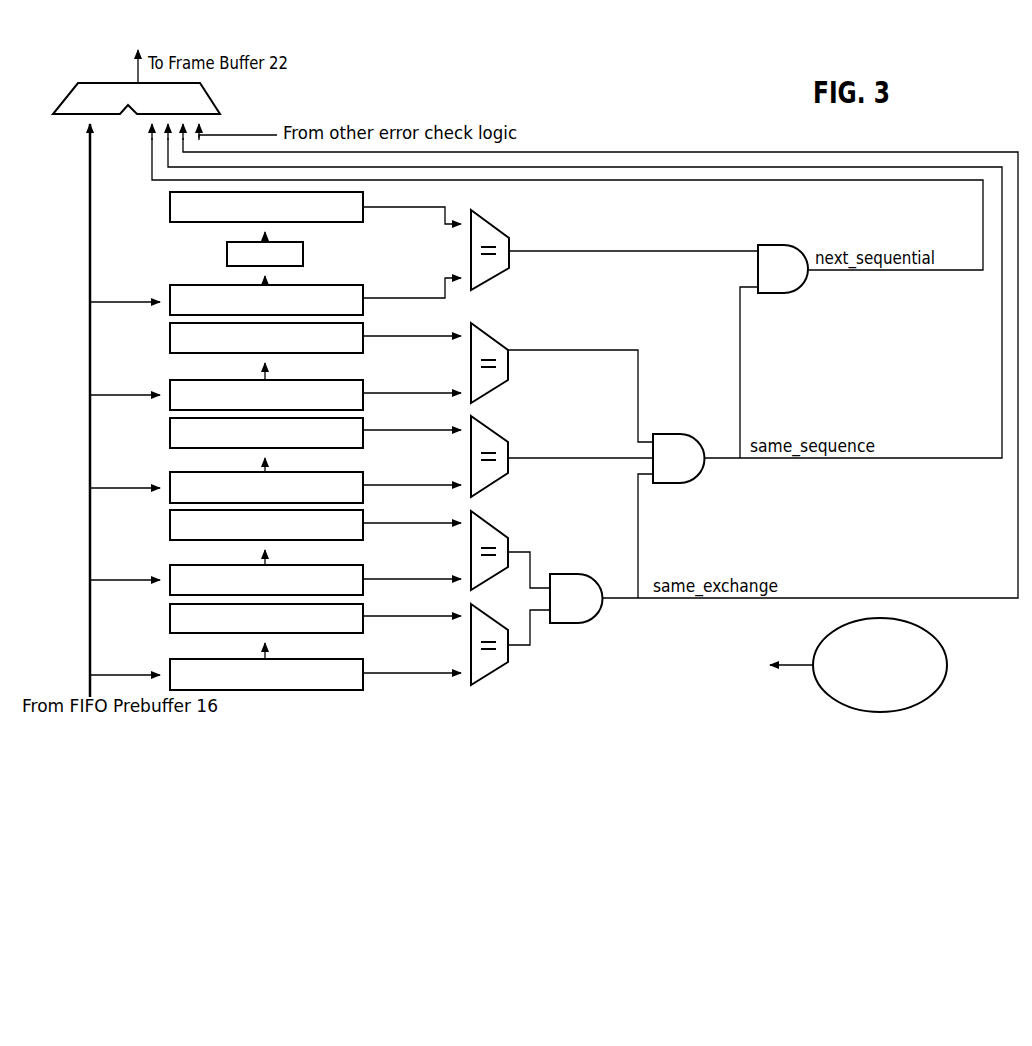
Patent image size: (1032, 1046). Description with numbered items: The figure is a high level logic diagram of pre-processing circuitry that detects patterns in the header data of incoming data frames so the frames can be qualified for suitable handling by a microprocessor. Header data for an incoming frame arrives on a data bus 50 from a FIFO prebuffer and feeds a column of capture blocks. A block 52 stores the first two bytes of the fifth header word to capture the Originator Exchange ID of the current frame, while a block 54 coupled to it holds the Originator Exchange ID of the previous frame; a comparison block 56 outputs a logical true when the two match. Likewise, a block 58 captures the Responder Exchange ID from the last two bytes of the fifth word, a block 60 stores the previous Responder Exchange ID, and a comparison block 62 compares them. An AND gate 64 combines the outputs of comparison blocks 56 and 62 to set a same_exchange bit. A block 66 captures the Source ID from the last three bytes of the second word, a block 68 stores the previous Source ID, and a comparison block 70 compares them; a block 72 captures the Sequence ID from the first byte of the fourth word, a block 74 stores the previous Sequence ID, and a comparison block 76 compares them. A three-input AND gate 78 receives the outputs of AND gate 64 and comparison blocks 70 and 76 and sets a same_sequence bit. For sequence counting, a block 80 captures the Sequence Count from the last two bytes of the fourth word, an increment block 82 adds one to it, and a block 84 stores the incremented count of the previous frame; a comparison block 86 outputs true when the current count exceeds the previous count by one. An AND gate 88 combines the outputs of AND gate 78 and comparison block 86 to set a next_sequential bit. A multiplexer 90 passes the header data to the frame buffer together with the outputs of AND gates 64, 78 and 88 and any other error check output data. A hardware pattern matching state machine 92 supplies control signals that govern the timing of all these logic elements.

The data bus 50 is at (90, 545).
The block 52 is at (363, 683).
The block 54 is at (363, 627).
The comparison block 56 is at (490, 677).
The block 58 is at (363, 590).
The block 60 is at (363, 534).
The comparison block 62 is at (490, 520).
The AND gate 64 is at (575, 623).
The block 66 is at (363, 496).
The block 68 is at (363, 442).
The comparison block 70 is at (490, 425).
The block 72 is at (363, 404).
The block 74 is at (363, 348).
The comparison block 76 is at (490, 332).
The AND gate 78 is at (680, 483).
The block 80 is at (363, 309).
The increment block 82 is at (303, 252).
The block 84 is at (363, 215).
The comparison block 86 is at (490, 219).
The AND gate 88 is at (784, 293).
The multiplexer 90 is at (210, 101).
The pattern matching state machine 92 is at (943, 680).